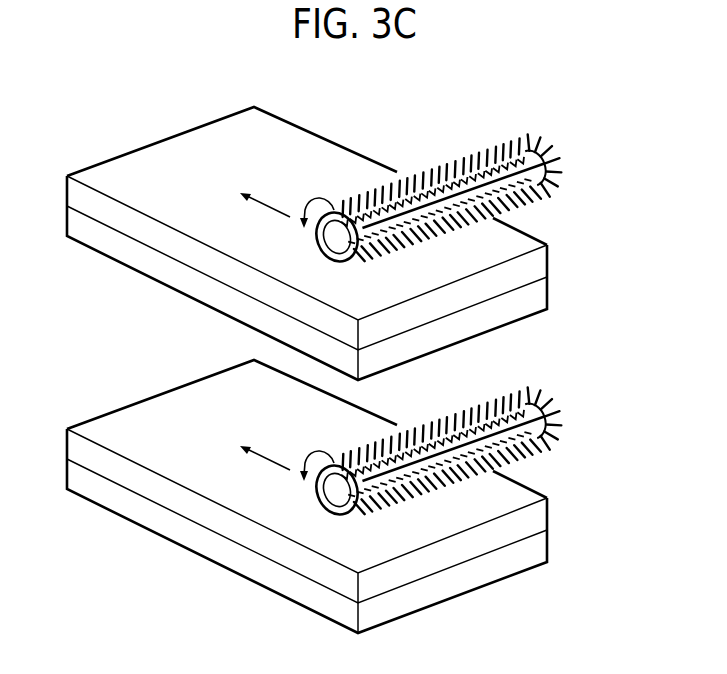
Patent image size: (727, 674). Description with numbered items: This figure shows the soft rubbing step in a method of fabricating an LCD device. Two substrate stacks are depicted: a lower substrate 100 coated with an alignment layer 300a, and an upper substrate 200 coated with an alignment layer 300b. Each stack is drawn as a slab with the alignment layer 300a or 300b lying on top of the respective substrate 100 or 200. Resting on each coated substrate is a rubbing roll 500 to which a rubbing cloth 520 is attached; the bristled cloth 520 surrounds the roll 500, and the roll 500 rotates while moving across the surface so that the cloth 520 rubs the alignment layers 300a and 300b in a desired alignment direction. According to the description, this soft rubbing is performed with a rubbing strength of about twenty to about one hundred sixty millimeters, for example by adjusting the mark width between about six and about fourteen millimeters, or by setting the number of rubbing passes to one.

The lower substrate 100 is at (340, 546).
The upper substrate 200 is at (548, 298).
The alignment layer 300a is at (345, 481).
The alignment layer 300b is at (548, 265).
The rubbing roll 500 is at (337, 238).
The rubbing cloth 520 is at (427, 172).